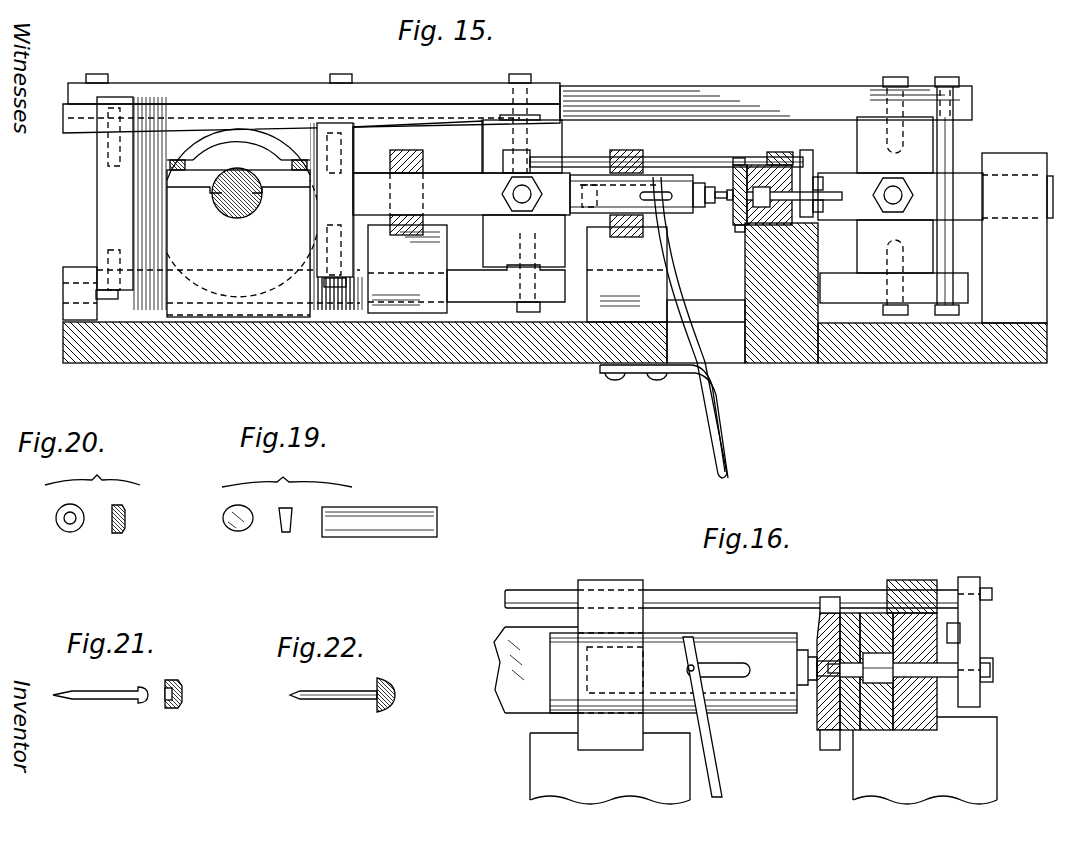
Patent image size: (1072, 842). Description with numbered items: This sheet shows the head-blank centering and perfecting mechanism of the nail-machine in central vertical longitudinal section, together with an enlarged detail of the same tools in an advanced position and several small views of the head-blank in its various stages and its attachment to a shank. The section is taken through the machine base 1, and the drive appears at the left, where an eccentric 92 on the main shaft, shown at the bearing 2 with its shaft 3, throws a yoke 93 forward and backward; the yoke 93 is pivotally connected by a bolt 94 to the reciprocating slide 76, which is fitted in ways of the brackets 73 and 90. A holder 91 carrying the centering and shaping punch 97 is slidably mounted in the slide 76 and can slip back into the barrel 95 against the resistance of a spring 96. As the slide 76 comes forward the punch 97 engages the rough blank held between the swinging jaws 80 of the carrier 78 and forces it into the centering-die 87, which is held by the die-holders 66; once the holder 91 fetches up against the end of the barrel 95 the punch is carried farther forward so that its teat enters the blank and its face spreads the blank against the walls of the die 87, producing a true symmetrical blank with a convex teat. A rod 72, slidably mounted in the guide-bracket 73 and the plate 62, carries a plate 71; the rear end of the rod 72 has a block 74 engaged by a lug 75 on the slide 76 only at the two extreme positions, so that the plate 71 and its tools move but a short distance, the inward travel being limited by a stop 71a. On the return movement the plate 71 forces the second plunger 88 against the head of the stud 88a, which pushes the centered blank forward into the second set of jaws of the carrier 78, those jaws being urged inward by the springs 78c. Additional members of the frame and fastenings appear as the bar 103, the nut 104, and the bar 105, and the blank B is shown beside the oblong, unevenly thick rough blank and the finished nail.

In FIG. 15, the base 1 is at (494, 365).
In FIG. 15, the bearing block 2 is at (228, 223).
In FIG. 15, the shaft 3 is at (250, 207).
In FIG. 15, the plate 62 is at (790, 152).
In FIG. 16, the plate 62 is at (932, 580).
In FIG. 15, the die-holders 66 is at (755, 165).
In FIG. 16, the die-holders 66 is at (868, 612).
In FIG. 15, the plate 71 is at (823, 205).
In FIG. 16, the plate 71 is at (982, 647).
In FIG. 16, the stop 71a is at (962, 632).
In FIG. 15, the rod 72 is at (692, 157).
In FIG. 16, the rod 72 is at (758, 590).
In FIG. 15, the guide-bracket 73 is at (628, 150).
In FIG. 16, the guide-bracket 73 is at (607, 582).
In FIG. 15, the block 74 is at (503, 158).
In FIG. 15, the lug 75 is at (532, 147).
In FIG. 15, the reciprocating slide 76 is at (461, 243).
In FIG. 16, the reciprocating slide 76 is at (536, 670).
In FIG. 15, the carrier 78 is at (733, 222).
In FIG. 16, the carrier 78 is at (820, 720).
In FIG. 16, the springs 78c is at (830, 762).
In FIG. 15, the swinging jaws 80 is at (731, 200).
In FIG. 16, the swinging jaws 80 is at (826, 684).
In FIG. 15, the centering-die 87 is at (742, 160).
In FIG. 16, the centering-die 87 is at (845, 612).
In FIG. 15, the second plunger 88 is at (807, 180).
In FIG. 16, the second plunger 88 is at (925, 690).
In FIG. 15, the stud 88a is at (752, 226).
In FIG. 16, the stud 88a is at (870, 684).
In FIG. 15, the bracket 90 is at (395, 157).
In FIG. 15, the holder 91 is at (705, 203).
In FIG. 16, the holder 91 is at (800, 660).
In FIG. 15, the eccentric 92 is at (152, 200).
In FIG. 15, the yoke 93 is at (452, 96).
In FIG. 15, the bolt 94 is at (519, 205).
In FIG. 16, the barrel 95 is at (740, 706).
In FIG. 15, the spring 96 is at (685, 260).
In FIG. 16, the spring 96 is at (722, 765).
In FIG. 15, the centering and shaping punch 97 is at (735, 190).
In FIG. 16, the centering and shaping punch 97 is at (820, 656).
In FIG. 15, the bar 103 is at (766, 103).
In FIG. 15, the nut 104 is at (900, 191).
In FIG. 15, the bar 105 is at (866, 212).
In FIG. 19, the blank B is at (378, 512).